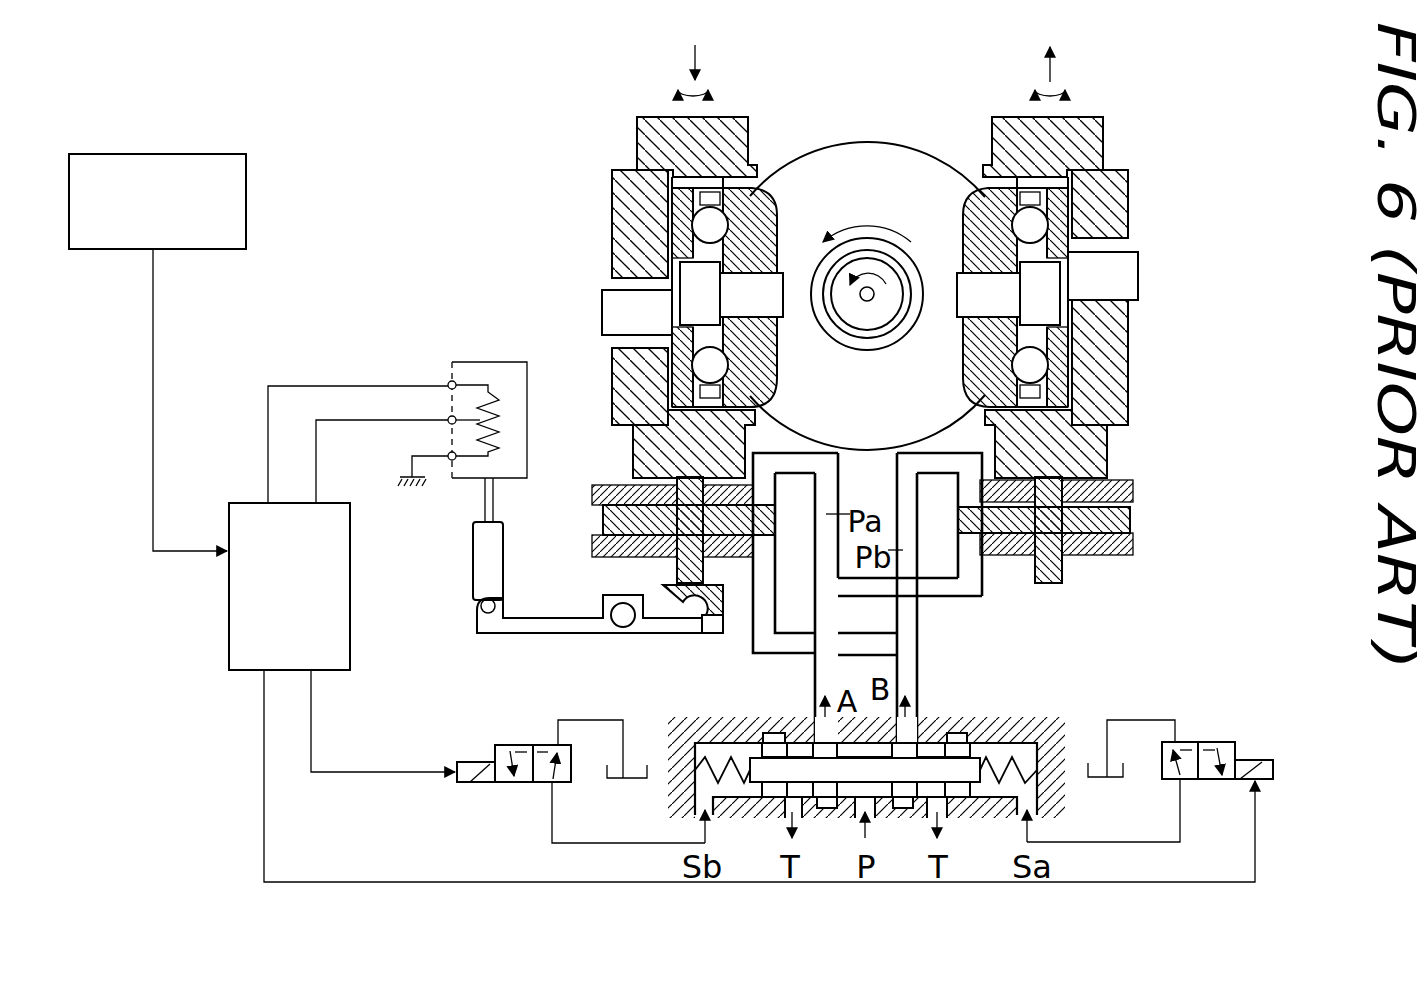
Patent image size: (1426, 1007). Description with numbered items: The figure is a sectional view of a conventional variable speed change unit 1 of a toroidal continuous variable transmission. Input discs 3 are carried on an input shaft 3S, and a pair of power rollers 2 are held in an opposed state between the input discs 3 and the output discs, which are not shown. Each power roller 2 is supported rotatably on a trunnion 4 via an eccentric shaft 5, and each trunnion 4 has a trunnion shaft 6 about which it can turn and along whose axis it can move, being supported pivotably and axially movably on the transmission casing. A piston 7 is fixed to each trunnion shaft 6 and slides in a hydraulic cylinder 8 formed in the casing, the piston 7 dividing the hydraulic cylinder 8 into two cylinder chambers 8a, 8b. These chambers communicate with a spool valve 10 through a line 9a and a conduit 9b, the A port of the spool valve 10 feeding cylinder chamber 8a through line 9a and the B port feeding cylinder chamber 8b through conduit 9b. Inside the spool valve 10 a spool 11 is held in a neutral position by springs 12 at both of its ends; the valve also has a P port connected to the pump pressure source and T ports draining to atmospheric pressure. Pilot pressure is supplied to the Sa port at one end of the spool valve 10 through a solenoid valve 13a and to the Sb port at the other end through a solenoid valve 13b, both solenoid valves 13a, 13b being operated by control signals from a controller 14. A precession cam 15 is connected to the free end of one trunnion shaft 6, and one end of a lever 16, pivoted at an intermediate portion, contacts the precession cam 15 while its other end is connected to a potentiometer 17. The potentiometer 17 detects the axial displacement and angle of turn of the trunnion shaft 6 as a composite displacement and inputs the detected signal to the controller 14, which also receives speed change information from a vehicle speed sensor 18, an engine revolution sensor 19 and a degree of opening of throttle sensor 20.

The variable speed change unit 1 is at (867, 259).
The power roller 2 is at (755, 195).
The input disc 3 is at (880, 165).
The input shaft 3S is at (857, 278).
The trunnion 4 is at (633, 193).
The eccentric shaft 5 is at (625, 308).
The trunnion shaft 6 is at (668, 574).
The piston 7 is at (600, 522).
The hydraulic cylinder 8 is at (867, 519).
The cylinder chamber 8a is at (635, 492).
The cylinder chamber 8b is at (632, 552).
The line 9a is at (818, 686).
The conduit 9b is at (903, 684).
The spool valve 10 is at (1025, 712).
The spool 11 is at (940, 772).
The spring 12 is at (718, 757).
The solenoid valve 13a is at (1257, 761).
The solenoid valve 13b is at (470, 762).
The controller 14 is at (243, 632).
The precession cam 15 is at (715, 628).
The lever 16 is at (555, 633).
The potentiometer 17 is at (490, 362).
The vehicle speed sensor 18 is at (157, 352).
The engine revolution sensor 19 is at (157, 352).
The degree of opening of throttle sensor 20 is at (157, 352).